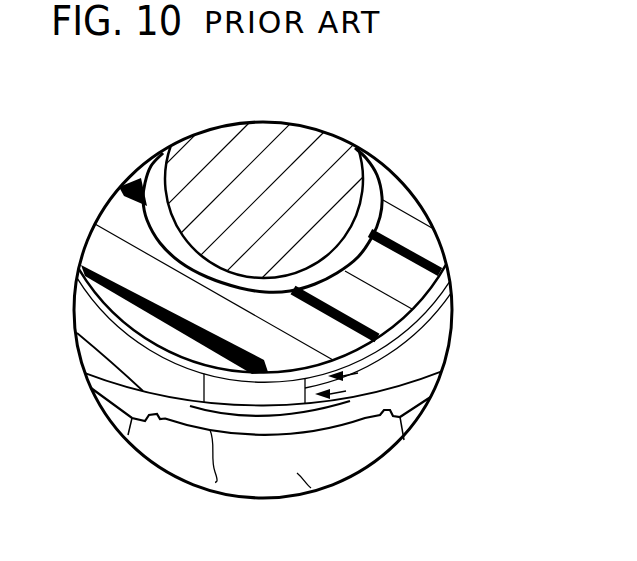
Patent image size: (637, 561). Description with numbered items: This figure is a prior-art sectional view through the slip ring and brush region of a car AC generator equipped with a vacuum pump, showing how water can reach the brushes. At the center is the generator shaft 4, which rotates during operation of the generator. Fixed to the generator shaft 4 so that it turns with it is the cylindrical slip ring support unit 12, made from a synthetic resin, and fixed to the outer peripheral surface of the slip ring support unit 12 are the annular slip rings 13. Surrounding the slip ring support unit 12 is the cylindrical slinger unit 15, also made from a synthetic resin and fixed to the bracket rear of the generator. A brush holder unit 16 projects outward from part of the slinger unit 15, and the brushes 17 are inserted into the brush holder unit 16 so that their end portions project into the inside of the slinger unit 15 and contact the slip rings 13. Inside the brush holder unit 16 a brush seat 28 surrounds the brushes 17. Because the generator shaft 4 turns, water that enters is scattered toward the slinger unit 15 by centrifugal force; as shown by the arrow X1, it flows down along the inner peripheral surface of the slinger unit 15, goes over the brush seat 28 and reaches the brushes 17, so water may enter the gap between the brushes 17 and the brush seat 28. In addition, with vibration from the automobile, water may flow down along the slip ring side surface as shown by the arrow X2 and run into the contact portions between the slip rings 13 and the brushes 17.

The generator shaft 4 is at (333, 153).
The slip ring support unit 12 is at (420, 243).
The slip rings 13 is at (427, 303).
The slinger unit 15 is at (417, 380).
The brush holder unit 16 is at (330, 430).
The brushes 17 is at (204, 383).
The brush seat 28 is at (187, 426).
The arrow X1 is at (425, 356).
The arrow X2 is at (420, 328).